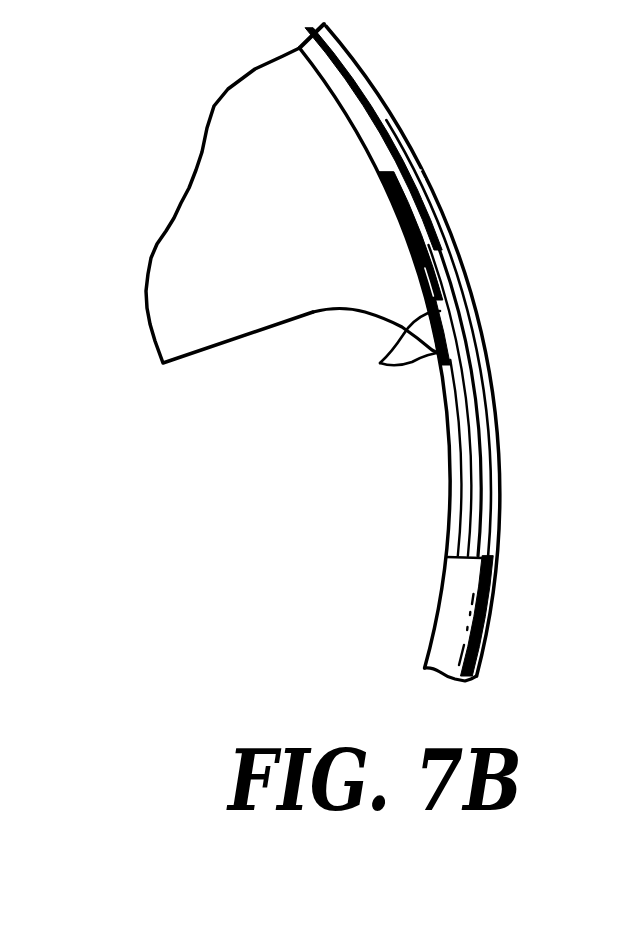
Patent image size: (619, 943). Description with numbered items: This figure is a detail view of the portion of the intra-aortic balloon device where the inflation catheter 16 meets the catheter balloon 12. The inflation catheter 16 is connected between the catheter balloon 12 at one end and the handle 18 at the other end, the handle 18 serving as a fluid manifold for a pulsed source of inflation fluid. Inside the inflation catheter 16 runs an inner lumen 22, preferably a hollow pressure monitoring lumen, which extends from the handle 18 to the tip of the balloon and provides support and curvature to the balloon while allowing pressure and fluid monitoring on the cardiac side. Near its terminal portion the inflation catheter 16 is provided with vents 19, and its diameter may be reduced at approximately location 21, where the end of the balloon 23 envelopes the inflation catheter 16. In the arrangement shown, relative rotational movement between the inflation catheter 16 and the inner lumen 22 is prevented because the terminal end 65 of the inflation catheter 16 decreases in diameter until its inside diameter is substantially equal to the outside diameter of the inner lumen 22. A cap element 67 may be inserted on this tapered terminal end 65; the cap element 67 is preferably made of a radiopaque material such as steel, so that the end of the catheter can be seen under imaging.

The catheter balloon 12 is at (262, 205).
The inflation catheter 16 is at (486, 638).
The handle 18 is at (7, 375).
The vents 19 is at (381, 363).
The location 21 is at (499, 452).
The inner lumen 22 is at (374, 111).
The end of the balloon 23 is at (450, 437).
The terminal end 65 is at (444, 220).
The cap element 67 is at (427, 183).